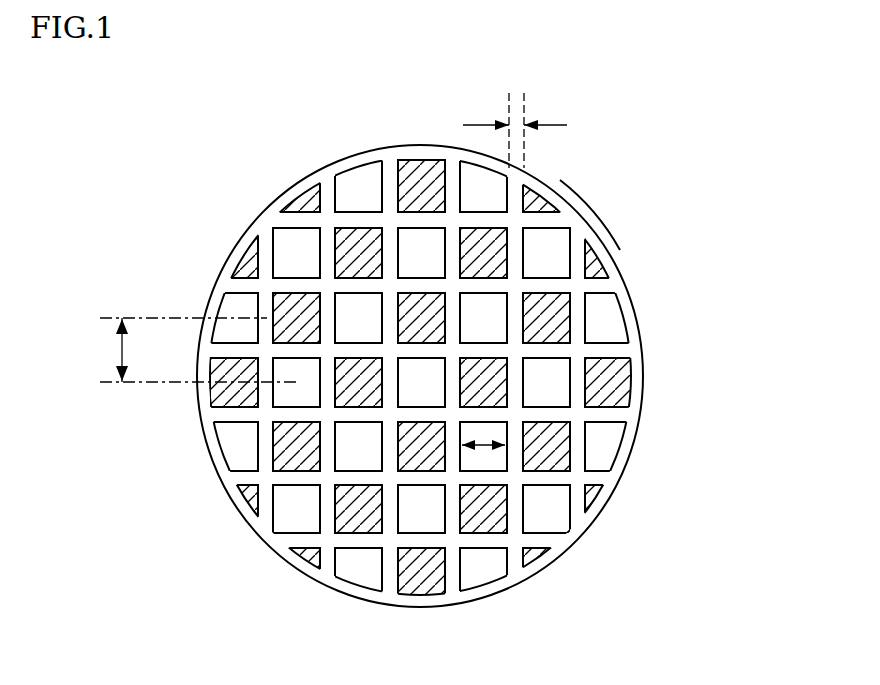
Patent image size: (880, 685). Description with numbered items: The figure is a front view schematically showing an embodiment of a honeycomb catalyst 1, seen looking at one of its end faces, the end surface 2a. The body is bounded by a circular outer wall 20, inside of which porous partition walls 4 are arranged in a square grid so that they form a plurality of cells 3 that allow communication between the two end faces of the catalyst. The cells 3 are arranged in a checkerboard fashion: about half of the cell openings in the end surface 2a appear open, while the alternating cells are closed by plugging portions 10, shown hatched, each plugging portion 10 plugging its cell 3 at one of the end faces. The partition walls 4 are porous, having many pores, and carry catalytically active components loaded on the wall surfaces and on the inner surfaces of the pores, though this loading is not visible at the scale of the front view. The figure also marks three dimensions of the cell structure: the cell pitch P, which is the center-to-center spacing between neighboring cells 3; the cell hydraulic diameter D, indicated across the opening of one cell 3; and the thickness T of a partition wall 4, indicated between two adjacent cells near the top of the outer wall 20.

The honeycomb catalyst 1 is at (188, 305).
The end surface 2a is at (590, 218).
The cell 3 is at (303, 270).
The partition wall 4 is at (520, 267).
The plugging portion 10 is at (290, 441).
The outer wall 20 is at (633, 333).
The cell pitch P is at (195, 350).
The thickness of the partition wall T is at (519, 94).
The cell hydraulic diameter D is at (486, 448).